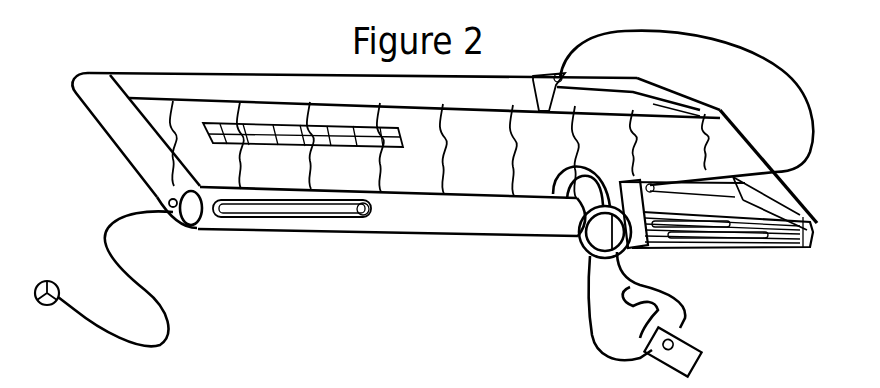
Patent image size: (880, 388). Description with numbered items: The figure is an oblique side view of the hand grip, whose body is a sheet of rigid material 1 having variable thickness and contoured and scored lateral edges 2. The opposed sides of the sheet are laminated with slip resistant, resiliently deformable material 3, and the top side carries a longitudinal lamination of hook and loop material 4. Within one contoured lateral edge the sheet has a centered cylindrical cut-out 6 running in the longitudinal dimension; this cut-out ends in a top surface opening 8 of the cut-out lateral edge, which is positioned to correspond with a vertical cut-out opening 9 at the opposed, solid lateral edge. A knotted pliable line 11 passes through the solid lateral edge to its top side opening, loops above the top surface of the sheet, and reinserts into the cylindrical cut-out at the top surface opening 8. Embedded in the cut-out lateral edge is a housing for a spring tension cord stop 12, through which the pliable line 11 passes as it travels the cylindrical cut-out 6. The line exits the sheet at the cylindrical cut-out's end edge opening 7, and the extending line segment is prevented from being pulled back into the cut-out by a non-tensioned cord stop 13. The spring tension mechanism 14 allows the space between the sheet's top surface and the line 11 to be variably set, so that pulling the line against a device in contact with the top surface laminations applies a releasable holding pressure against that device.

The sheet of rigid material 1 is at (187, 85).
The contoured and scored lateral edges 2 is at (738, 257).
The slip resistant, resiliently deformable material 3 is at (693, 140).
The longitudinal lamination of hook and loop material 4 is at (277, 133).
The cylindrical cut-out 6 is at (278, 233).
The end edge opening of the cylindrical cut-out 7 is at (162, 196).
The top surface opening of the cut-out lateral edge 8 is at (680, 180).
The vertical cut-out opening 9 is at (556, 71).
The pliable line 11 is at (173, 323).
The housing for a spring tension cord stop 12 is at (580, 246).
The non-tensioned cord stop 13 is at (45, 307).
The spring tension mechanism 14 is at (707, 354).